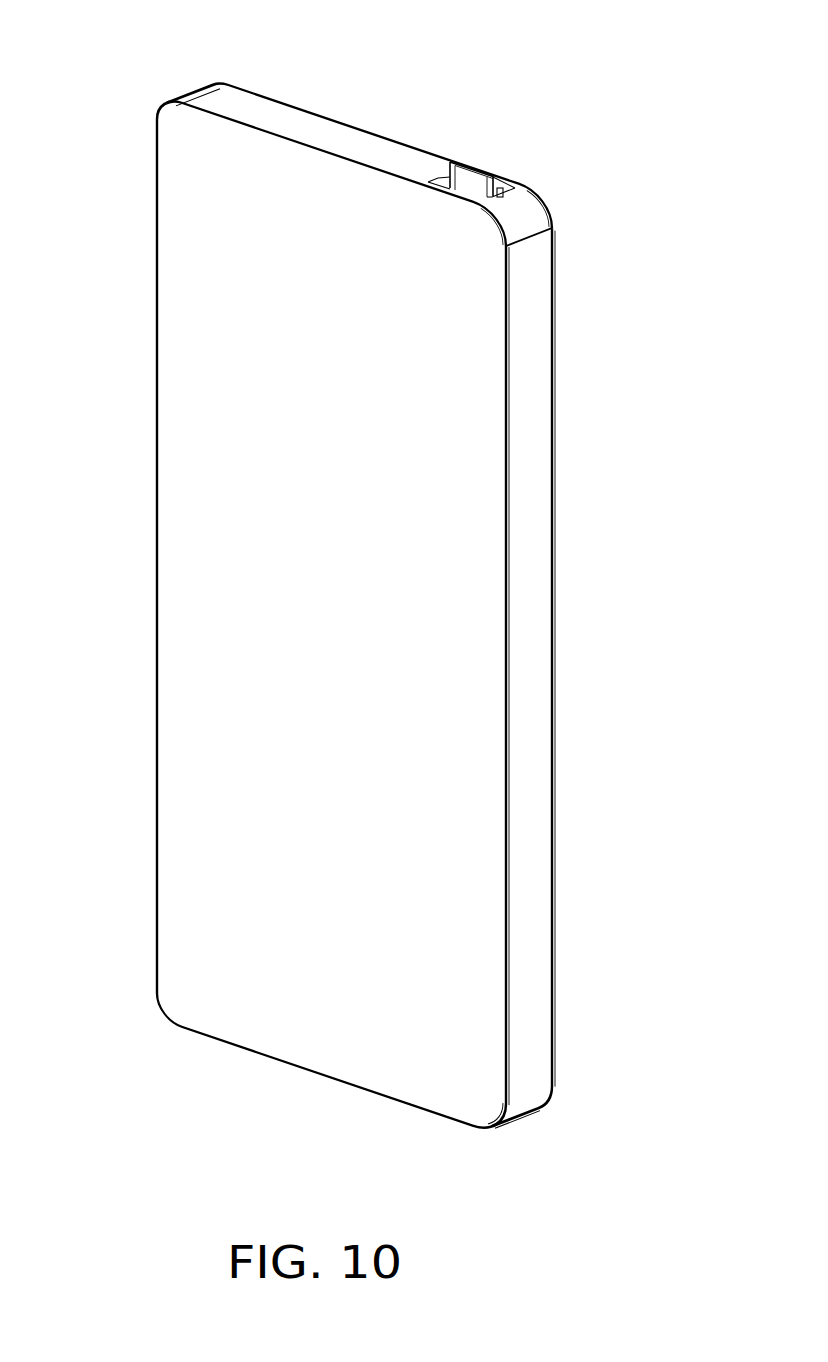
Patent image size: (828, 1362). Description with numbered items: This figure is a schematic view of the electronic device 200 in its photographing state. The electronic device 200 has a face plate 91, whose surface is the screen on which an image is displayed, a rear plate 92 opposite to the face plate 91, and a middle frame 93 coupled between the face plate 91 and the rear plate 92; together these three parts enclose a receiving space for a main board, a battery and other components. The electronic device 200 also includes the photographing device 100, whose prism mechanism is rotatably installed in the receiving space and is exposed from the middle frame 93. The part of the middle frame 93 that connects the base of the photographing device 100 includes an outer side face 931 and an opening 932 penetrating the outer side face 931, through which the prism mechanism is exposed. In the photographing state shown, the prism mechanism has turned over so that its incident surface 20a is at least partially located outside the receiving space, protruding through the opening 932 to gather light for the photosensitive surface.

The electronic device 200 is at (371, 575).
The face plate 91 is at (193, 287).
The rear plate 92 is at (555, 558).
The middle frame 93 is at (530, 370).
The outer side face 931 is at (335, 133).
The opening 932 is at (442, 189).
The incident surface 20a is at (472, 178).
The photographing device 100 is at (503, 177).